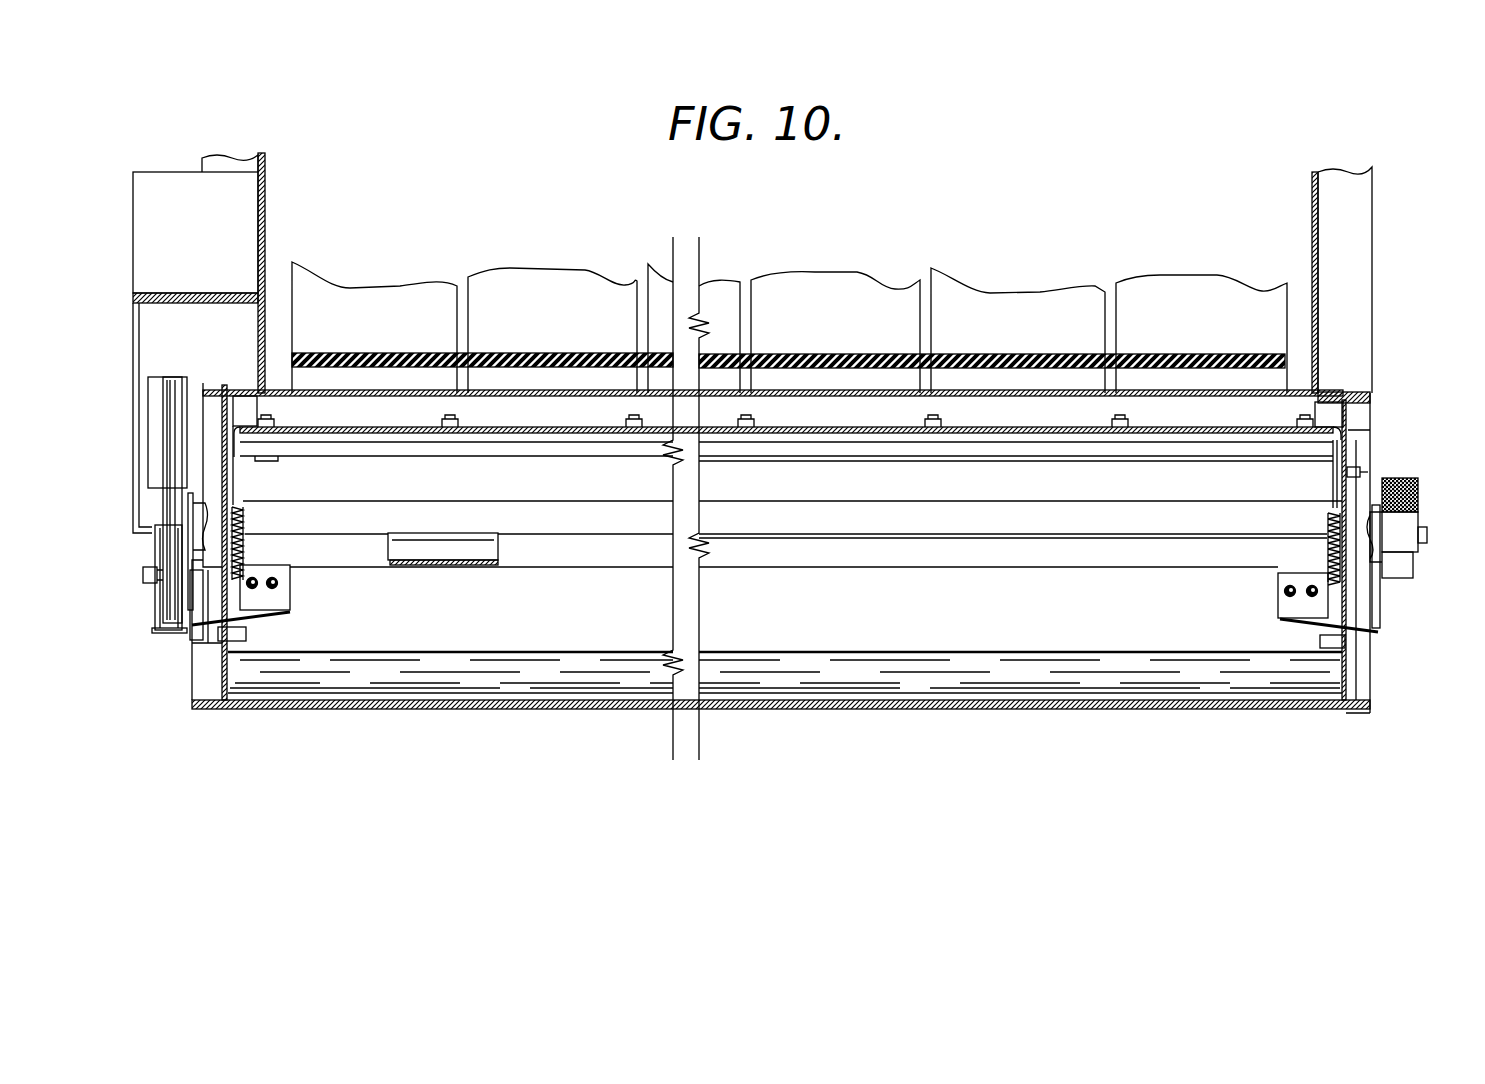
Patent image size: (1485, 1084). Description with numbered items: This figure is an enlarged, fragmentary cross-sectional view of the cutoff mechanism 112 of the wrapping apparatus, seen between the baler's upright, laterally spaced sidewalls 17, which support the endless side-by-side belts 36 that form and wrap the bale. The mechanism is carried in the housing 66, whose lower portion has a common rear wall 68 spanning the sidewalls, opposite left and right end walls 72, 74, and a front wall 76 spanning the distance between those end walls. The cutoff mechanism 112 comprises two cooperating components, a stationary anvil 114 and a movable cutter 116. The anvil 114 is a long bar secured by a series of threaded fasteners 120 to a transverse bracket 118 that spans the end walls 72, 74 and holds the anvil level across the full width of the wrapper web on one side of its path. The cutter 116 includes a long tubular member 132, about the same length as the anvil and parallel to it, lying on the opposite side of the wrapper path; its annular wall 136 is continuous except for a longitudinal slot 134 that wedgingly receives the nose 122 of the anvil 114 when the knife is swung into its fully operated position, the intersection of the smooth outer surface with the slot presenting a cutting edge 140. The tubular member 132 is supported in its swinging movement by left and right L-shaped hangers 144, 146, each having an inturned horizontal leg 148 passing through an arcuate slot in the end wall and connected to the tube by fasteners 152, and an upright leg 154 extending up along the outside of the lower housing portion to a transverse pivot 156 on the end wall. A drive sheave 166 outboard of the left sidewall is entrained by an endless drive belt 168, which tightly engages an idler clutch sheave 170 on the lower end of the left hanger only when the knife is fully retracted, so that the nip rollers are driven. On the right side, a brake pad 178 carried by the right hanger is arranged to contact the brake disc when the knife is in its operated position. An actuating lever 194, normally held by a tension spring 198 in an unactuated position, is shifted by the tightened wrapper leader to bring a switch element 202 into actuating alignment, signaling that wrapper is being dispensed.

The sidewalls 17 is at (262, 214).
The belts 36 is at (415, 292).
The rear wall 68 is at (790, 393).
The cutoff mechanism 112 is at (1163, 419).
The anvil 114 is at (1075, 462).
The cutter 116 is at (832, 572).
The transverse bracket 118 is at (612, 427).
The threaded fasteners 120 is at (275, 420).
The nose 122 is at (798, 458).
The tubular member 132 is at (640, 567).
The longitudinal slot 134 is at (482, 532).
The annular wall 136 is at (447, 565).
The cutting edge 140 is at (479, 549).
The left hanger 144 is at (208, 635).
The right hanger 146 is at (1387, 642).
The horizontal leg 148 is at (250, 613).
The fasteners 152 is at (290, 582).
The upright leg 154 is at (195, 642).
The transverse pivot 156 is at (1433, 534).
The drive sheave 166 is at (130, 390).
The drive belt 168 is at (160, 390).
The idler clutch sheave 170 is at (160, 545).
The brake pad 178 is at (1393, 480).
The actuating lever 194 is at (822, 495).
The tension spring 198 is at (246, 515).
The switch element 202 is at (1357, 470).
The housing 66 is at (1082, 722).
The left end wall 72 is at (232, 665).
The right end wall 74 is at (1350, 672).
The front wall 76 is at (833, 710).